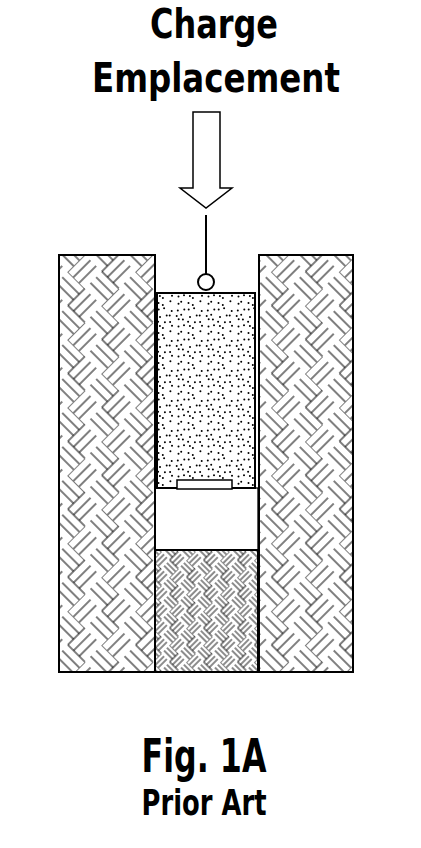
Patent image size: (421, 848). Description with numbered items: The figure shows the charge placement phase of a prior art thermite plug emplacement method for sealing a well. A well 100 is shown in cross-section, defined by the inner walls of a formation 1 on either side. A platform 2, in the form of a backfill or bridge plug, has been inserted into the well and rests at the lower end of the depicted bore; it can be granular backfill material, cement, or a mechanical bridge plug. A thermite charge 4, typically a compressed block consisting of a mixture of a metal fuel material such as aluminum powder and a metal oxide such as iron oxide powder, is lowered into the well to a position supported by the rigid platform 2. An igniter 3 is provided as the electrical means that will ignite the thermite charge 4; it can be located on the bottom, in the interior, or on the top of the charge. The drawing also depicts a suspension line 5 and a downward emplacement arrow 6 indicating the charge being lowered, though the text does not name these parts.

The well 100 is at (209, 414).
The formation 1 is at (68, 407).
The platform 2 is at (210, 665).
The igniter 3 is at (183, 503).
The thermite charge 4 is at (240, 292).
The detonator lead wire 5 is at (203, 240).
The emplacement direction arrow 6 is at (193, 150).